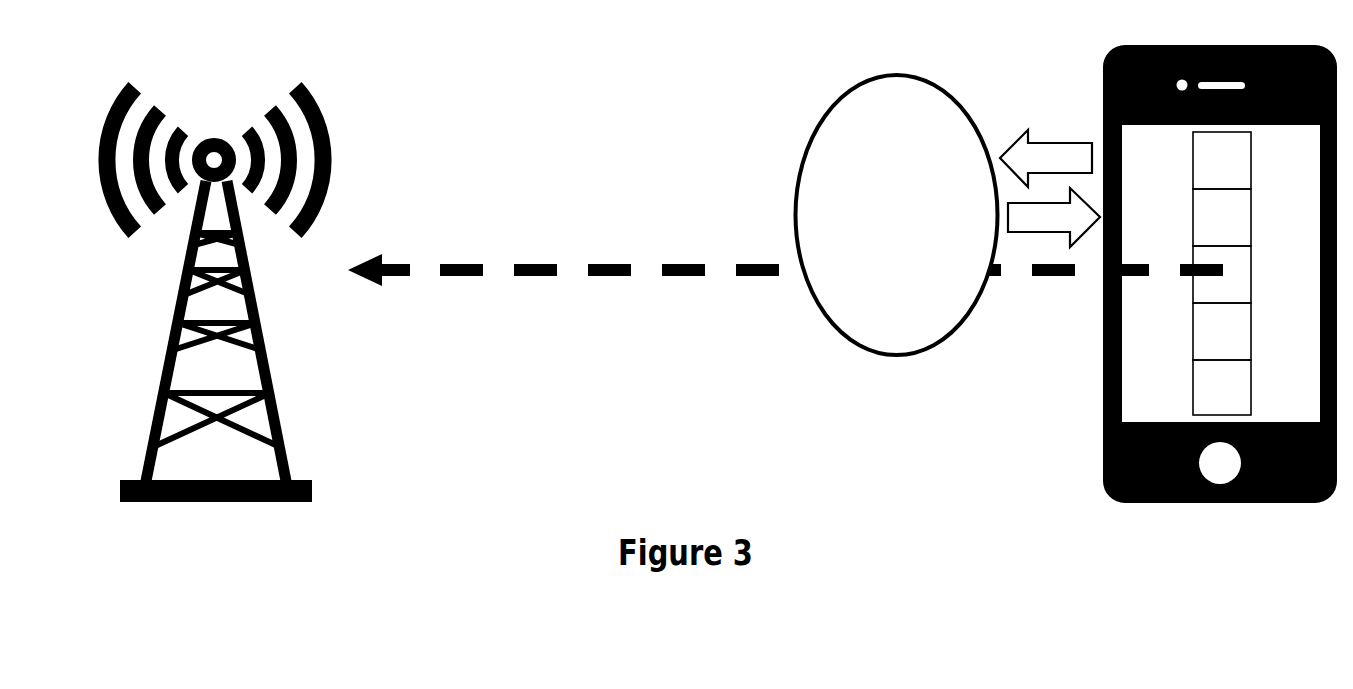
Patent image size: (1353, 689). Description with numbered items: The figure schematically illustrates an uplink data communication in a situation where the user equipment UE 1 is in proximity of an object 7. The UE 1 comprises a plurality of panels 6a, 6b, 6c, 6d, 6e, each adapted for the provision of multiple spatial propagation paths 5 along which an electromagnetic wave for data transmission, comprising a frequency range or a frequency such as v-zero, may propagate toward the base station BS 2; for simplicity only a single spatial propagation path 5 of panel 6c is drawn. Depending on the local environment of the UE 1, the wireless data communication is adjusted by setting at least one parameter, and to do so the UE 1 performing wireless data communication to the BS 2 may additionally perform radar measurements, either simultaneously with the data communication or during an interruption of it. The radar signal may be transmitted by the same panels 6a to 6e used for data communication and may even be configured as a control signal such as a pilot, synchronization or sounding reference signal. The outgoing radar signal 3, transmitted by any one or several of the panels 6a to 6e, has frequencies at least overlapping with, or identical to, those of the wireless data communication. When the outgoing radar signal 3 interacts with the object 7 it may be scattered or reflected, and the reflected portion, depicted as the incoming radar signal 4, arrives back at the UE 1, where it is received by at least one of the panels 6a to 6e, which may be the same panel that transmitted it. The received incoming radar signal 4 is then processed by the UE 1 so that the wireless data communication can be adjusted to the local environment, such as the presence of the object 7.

The user equipment 1 is at (1102, 412).
The base station 2 is at (267, 360).
The outgoing radar signal 3 is at (1035, 142).
The incoming radar signal 4 is at (1043, 230).
The spatial propagation path 5 is at (553, 270).
The panel 6a is at (1251, 165).
The panel 6b is at (1251, 221).
The panel 6c is at (1251, 276).
The panel 6d is at (1251, 338).
The panel 6e is at (1251, 392).
The object 7 is at (820, 306).